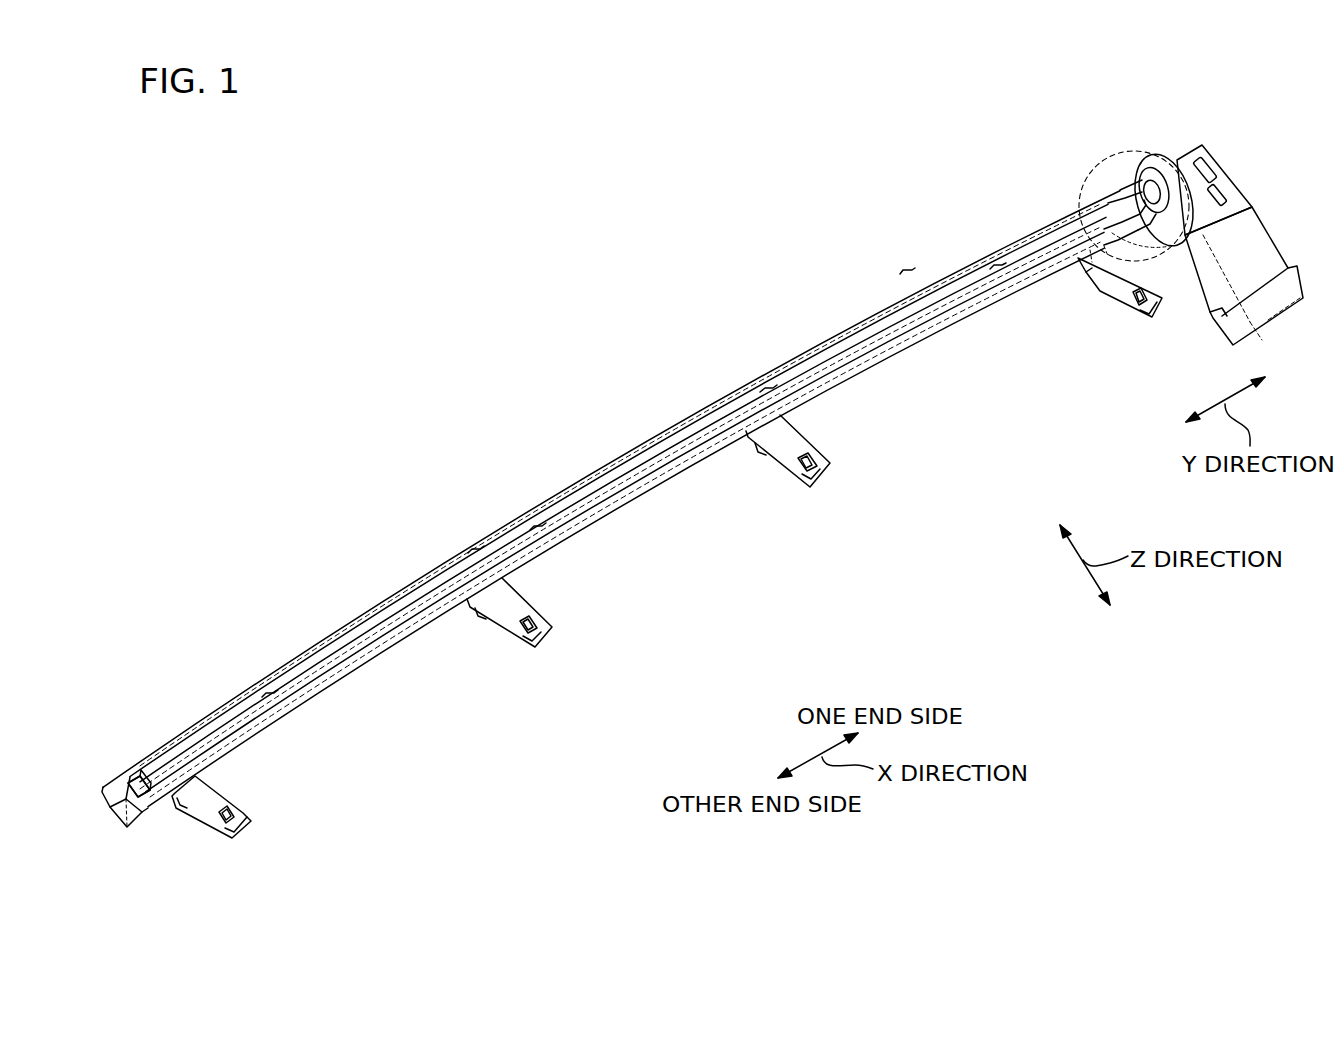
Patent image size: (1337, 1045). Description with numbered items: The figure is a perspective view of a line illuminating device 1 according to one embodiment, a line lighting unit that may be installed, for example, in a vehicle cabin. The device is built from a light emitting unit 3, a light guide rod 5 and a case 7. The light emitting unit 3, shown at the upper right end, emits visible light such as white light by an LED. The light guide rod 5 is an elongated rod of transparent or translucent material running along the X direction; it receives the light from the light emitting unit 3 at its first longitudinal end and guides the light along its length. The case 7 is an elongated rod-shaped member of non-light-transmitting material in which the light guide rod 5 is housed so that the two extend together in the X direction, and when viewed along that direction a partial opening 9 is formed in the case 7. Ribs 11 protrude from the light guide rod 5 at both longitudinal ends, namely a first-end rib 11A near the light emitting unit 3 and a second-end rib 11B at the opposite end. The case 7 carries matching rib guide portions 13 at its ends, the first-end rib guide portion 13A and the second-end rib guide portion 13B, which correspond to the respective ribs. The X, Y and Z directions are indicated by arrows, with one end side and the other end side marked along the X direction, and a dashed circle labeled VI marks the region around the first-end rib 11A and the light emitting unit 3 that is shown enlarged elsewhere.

The line illuminating device 1 is at (853, 277).
The light emitting unit 3 is at (1228, 178).
The light guide rod 5 is at (650, 452).
The case 7 is at (627, 503).
The opening 9 is at (545, 530).
The rib 11 is at (155, 770).
The first-end rib 11A is at (1113, 210).
The second-end rib 11B is at (155, 770).
The rib guide portion 13 is at (648, 531).
The first-end rib guide portion 13A is at (1100, 280).
The second-end rib guide portion 13B is at (160, 800).
The enlarged view region VI is at (1080, 188).